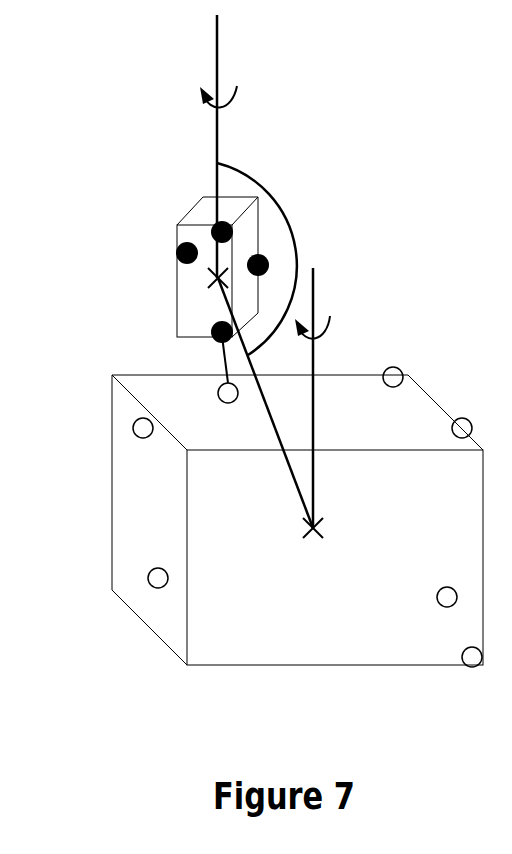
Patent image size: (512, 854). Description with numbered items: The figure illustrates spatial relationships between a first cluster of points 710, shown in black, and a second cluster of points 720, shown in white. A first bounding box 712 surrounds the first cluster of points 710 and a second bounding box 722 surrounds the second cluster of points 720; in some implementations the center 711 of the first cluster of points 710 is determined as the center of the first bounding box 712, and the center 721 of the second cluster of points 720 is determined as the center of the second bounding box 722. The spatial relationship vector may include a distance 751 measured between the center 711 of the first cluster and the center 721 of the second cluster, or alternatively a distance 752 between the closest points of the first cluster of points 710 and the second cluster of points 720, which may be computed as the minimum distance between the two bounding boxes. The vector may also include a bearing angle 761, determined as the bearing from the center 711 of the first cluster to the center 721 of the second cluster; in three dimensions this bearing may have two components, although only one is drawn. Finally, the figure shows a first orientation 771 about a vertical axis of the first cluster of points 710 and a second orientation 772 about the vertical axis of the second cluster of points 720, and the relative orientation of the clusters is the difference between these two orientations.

The first cluster of points 710 is at (182, 200).
The center of the first cluster of points 711 is at (211, 294).
The first bounding box 712 is at (180, 282).
The second cluster of points 720 is at (438, 356).
The center of the second cluster of points 721 is at (303, 537).
The second bounding box 722 is at (110, 450).
The distance 751 is at (270, 418).
The distance 752 is at (224, 355).
The bearing angle 761 is at (247, 177).
The first orientation 771 is at (232, 100).
The second orientation 772 is at (324, 333).